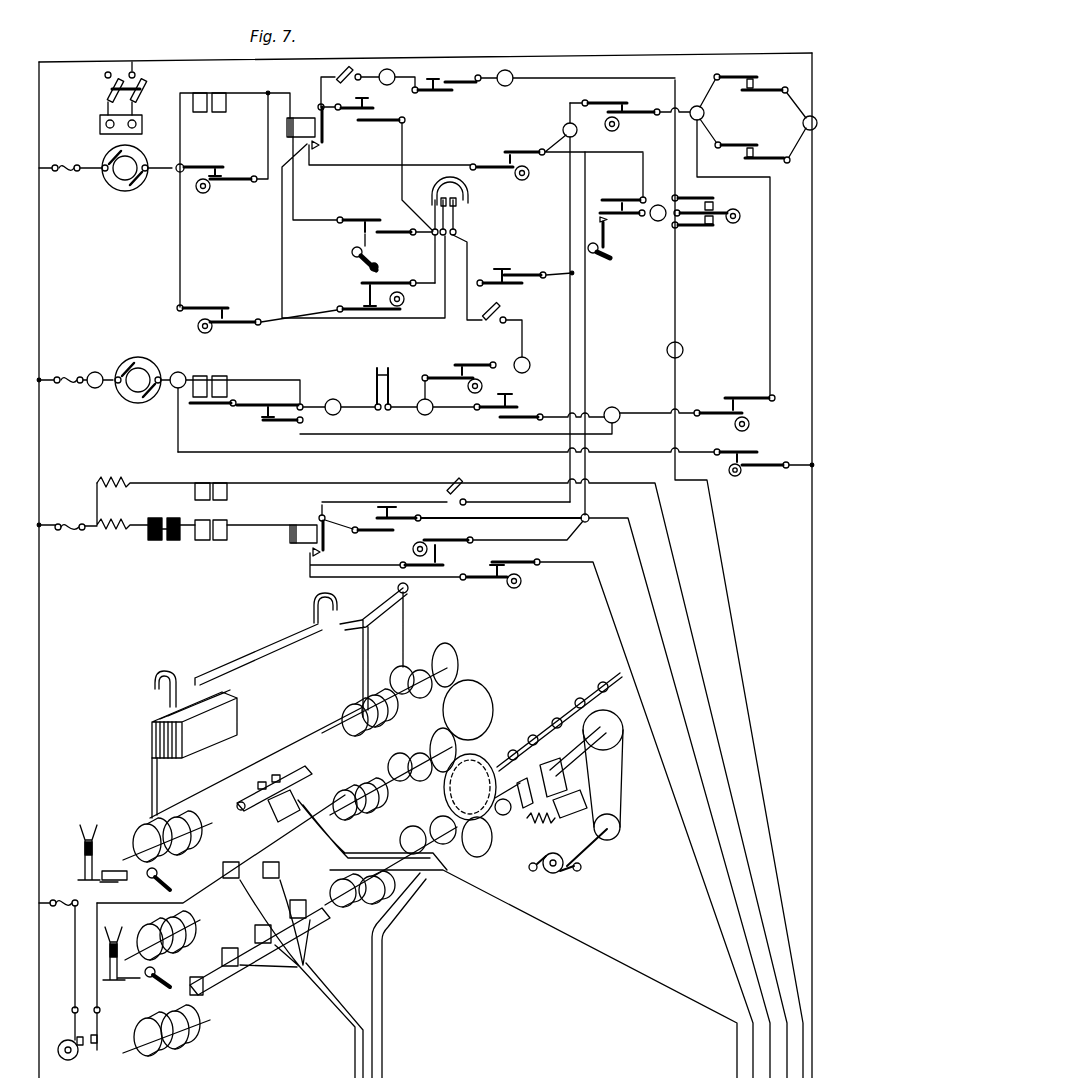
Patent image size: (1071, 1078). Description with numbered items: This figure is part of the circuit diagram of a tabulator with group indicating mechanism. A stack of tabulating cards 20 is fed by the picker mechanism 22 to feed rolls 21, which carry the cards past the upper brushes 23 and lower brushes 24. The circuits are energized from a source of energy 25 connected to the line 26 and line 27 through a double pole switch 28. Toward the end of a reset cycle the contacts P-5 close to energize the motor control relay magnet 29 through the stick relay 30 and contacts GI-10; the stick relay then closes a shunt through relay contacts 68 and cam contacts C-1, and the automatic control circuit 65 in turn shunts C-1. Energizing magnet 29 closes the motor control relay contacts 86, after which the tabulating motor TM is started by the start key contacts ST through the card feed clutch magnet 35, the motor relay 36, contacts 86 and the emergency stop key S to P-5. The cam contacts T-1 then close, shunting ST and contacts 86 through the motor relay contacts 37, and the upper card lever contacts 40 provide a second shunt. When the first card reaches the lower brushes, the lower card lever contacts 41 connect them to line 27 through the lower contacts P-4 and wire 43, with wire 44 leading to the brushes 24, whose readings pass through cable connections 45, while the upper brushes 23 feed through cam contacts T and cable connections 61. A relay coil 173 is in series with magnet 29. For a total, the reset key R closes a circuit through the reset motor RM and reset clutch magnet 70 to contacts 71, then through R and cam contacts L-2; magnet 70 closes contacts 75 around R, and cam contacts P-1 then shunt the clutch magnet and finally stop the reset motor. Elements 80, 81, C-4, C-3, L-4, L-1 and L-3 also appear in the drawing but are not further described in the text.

The tabulating cards 20 is at (190, 735).
The feed rolls 21 is at (380, 727).
The picker mechanism 22 is at (407, 630).
The upper brushes 23 is at (307, 785).
The lower brushes 24 is at (297, 812).
The source of energy 25 is at (142, 124).
The line 26 is at (40, 263).
The line 27 is at (413, 55).
The double pole switch 28 is at (142, 95).
The motor control relay magnet 29 is at (228, 532).
The stick relay 30 is at (303, 523).
The card feed clutch magnet 35 is at (227, 106).
The motor relay 36 is at (302, 117).
The motor relay contacts 37 is at (318, 148).
The upper card lever contacts 40 is at (386, 222).
The lower card lever contacts 41 is at (618, 218).
The wire 43 is at (733, 623).
The wire 44 is at (623, 962).
The cable connections 45 is at (320, 990).
The cable connections 61 is at (382, 987).
The automatic control circuit 65 is at (733, 888).
The relay contacts 68 is at (325, 553).
The reset clutch magnet 70 is at (222, 380).
The contacts 71 is at (387, 365).
The contacts 75 is at (263, 419).
The contacts 80 is at (228, 492).
The conductor 81 is at (362, 485).
The motor control relay contacts 86 is at (460, 210).
The relay coil 173 is at (150, 531).
The tabulating motor TM is at (323, 519).
The reset motor RM is at (111, 393).
The relay C-4 is at (226, 150).
The relay C-3 is at (387, 296).
The cam contacts C-1 is at (491, 544).
The start key contacts ST is at (378, 164).
The emergency stop key S is at (498, 177).
The cam contacts T-1 is at (556, 165).
The cam contacts P-5 is at (630, 120).
The lower contacts P-4 is at (695, 222).
The cam contacts P-1 is at (496, 470).
The relay L-4 is at (257, 324).
The cam contacts L-2 is at (540, 414).
The relay L-1 is at (476, 351).
The relay L-3 is at (506, 573).
The reset key R is at (508, 407).
The contacts GI-10 is at (466, 517).
The cam contacts T is at (69, 986).